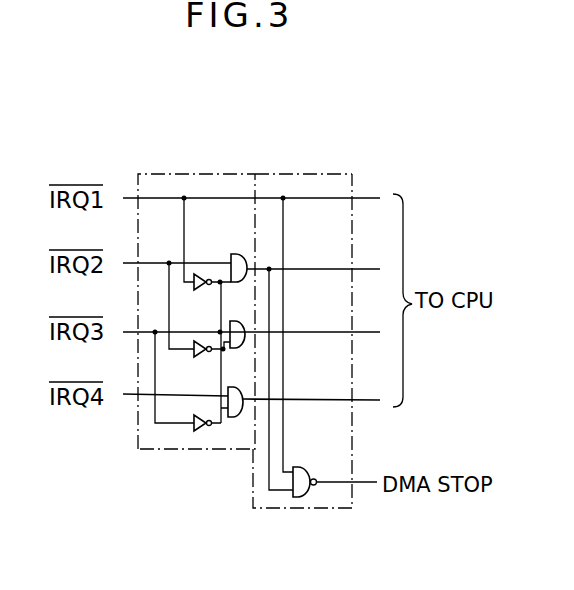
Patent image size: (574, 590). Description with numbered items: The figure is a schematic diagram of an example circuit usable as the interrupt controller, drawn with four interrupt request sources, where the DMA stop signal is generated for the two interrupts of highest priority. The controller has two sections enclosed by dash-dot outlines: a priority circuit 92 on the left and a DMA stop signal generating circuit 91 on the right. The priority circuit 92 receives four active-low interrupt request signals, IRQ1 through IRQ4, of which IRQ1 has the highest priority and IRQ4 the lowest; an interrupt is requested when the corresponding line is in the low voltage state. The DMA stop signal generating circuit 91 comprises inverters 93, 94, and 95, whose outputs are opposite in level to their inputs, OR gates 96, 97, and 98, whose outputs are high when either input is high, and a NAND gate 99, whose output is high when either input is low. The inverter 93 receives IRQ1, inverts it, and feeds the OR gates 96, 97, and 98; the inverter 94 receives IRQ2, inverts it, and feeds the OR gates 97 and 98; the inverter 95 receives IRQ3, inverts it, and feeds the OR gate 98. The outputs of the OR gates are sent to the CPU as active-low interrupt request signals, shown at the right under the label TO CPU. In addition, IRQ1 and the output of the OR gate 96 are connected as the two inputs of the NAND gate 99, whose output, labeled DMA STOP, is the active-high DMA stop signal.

The DMA stop signal generating circuit 91 is at (353, 465).
The priority circuit 92 is at (157, 173).
The inverter 93 is at (196, 291).
The inverter 94 is at (197, 358).
The inverter 95 is at (194, 432).
The OR gate 96 is at (236, 253).
The OR gate 97 is at (236, 320).
The OR gate 98 is at (236, 418).
The NAND gate 99 is at (300, 466).